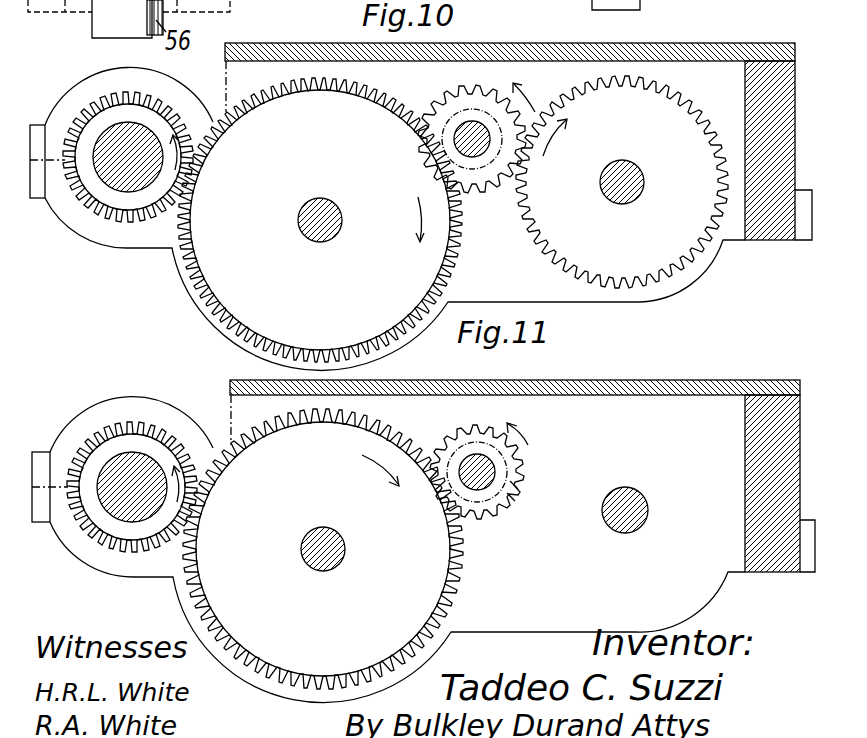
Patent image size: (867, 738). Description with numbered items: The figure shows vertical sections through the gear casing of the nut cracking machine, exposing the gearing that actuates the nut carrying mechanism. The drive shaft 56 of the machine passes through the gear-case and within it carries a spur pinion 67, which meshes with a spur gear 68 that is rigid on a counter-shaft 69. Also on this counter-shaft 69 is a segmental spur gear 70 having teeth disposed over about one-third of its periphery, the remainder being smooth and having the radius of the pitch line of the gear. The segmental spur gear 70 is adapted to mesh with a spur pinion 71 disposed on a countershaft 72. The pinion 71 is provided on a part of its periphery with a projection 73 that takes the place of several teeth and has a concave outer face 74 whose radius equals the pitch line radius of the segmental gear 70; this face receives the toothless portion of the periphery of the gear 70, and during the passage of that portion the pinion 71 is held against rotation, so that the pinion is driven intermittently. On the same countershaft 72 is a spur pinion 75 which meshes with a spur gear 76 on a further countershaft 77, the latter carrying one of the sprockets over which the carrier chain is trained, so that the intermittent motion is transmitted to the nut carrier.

In FIG. 10, the drive shaft 56 is at (132, 183).
In FIG. 11, the drive shaft 56 is at (113, 518).
In FIG. 10, the spur pinion 67 is at (82, 207).
In FIG. 11, the spur pinion 67 is at (97, 533).
In FIG. 10, the spur gear 68 is at (448, 272).
In FIG. 11, the spur gear 68 is at (413, 442).
In FIG. 10, the counter-shaft 69 is at (341, 223).
In FIG. 11, the counter-shaft 69 is at (344, 550).
In FIG. 10, the segmental spur gear 70 is at (320, 220).
In FIG. 11, the segmental spur gear 70 is at (440, 597).
In FIG. 10, the spur pinion 71 is at (472, 139).
In FIG. 11, the spur pinion 71 is at (517, 450).
In FIG. 10, the countershaft 72 is at (487, 146).
In FIG. 11, the countershaft 72 is at (490, 471).
In FIG. 11, the projection 73 is at (511, 488).
In FIG. 11, the concave outer face 74 is at (513, 495).
In FIG. 10, the spur pinion 75 is at (521, 112).
In FIG. 10, the spur gear 76 is at (702, 117).
In FIG. 10, the countershaft 77 is at (643, 177).
In FIG. 11, the countershaft 77 is at (632, 498).